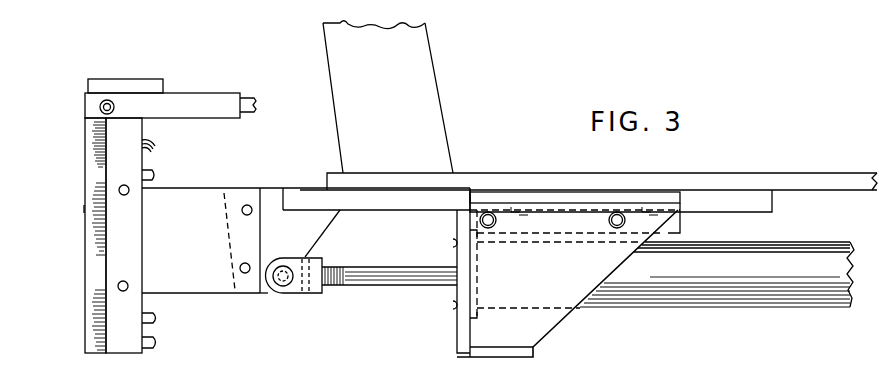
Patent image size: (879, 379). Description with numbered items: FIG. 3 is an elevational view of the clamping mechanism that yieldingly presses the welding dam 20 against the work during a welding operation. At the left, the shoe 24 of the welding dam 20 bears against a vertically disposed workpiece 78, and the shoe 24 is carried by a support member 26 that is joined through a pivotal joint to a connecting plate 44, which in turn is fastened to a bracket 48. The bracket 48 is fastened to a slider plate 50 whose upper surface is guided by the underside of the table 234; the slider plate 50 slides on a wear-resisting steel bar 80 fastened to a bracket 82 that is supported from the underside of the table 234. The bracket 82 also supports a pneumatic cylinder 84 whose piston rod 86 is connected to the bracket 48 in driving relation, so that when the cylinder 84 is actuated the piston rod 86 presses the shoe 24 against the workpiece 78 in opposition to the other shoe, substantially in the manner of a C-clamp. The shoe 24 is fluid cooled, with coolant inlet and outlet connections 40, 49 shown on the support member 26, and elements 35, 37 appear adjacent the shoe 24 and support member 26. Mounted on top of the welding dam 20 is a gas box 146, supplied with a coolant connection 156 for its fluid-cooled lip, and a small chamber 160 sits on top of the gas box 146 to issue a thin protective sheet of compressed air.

The welding dam 20 is at (76, 209).
The shoe 24 is at (92, 130).
The support member 26 is at (127, 134).
The pin 35 is at (148, 174).
The lower bracket 37 is at (158, 320).
The coolant inlet connection 40 is at (148, 153).
The connecting plate 44 is at (220, 282).
The bracket 48 is at (287, 237).
The coolant outlet connection 49 is at (156, 345).
The slider plate 50 is at (302, 197).
The workpiece 78 is at (718, 197).
The wear-resisting steel bar 80 is at (672, 227).
The bracket 82 is at (542, 318).
The pneumatic cylinder 84 is at (748, 290).
The piston rod 86 is at (373, 278).
The gas box 146 is at (220, 110).
The coolant outlet connection 156 is at (99, 107).
The small chamber 160 is at (137, 70).
The table 234 is at (843, 150).